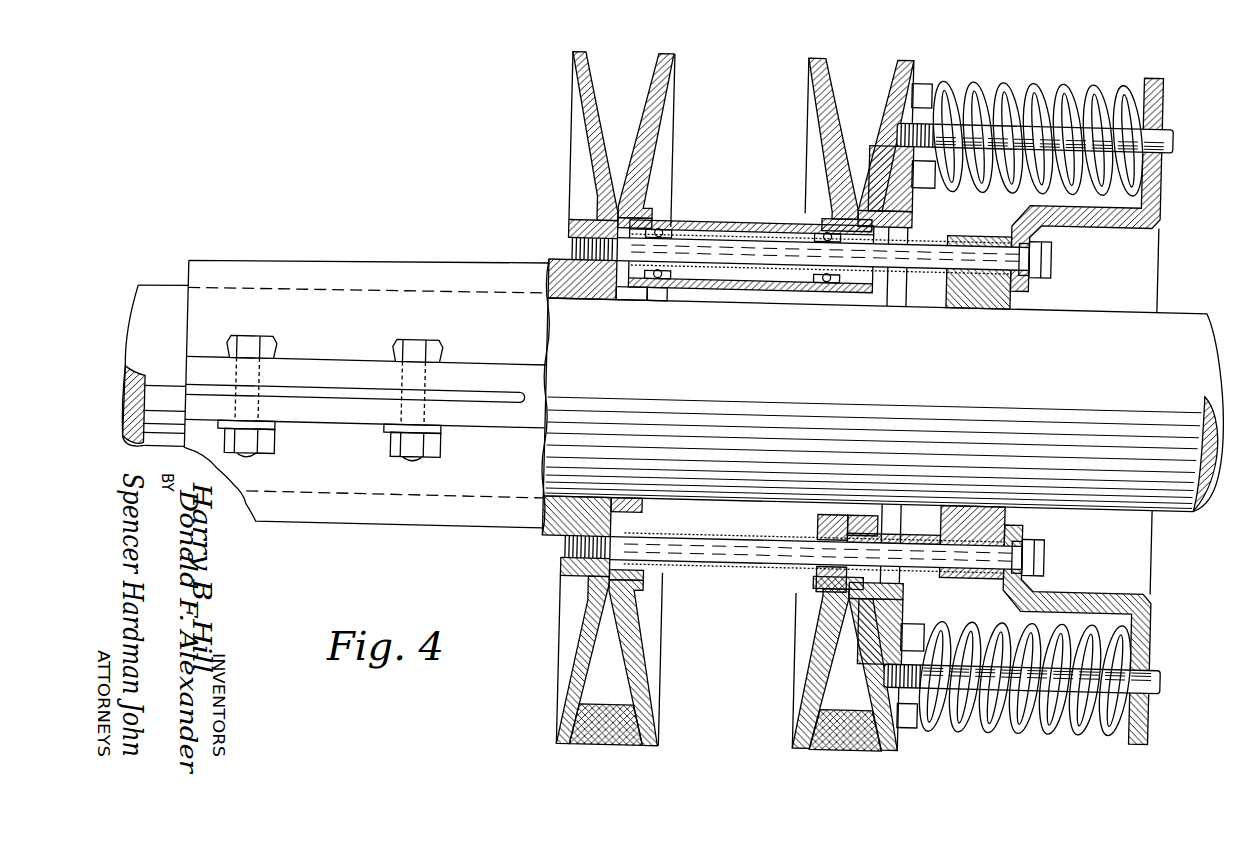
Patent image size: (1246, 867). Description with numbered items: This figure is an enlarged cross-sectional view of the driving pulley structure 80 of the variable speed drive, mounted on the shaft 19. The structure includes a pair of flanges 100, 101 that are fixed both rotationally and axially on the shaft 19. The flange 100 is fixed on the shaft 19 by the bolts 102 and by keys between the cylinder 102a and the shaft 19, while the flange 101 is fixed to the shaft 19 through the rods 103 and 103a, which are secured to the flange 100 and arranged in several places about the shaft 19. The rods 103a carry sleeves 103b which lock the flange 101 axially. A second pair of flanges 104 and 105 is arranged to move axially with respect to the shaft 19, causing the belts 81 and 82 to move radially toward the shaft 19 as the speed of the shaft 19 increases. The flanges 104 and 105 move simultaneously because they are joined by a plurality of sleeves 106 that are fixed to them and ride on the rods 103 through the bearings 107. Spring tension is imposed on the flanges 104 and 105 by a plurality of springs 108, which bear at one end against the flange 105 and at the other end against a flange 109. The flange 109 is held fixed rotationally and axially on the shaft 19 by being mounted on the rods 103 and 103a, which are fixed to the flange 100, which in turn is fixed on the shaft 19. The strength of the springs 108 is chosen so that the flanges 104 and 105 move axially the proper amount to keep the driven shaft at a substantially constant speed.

The shaft 19 is at (1178, 292).
The driving pulley structure 80 is at (673, 413).
The belt 81 is at (903, 420).
The belt 82 is at (630, 411).
The flange 100 is at (580, 72).
The flange 101 is at (823, 83).
The bolts 102 is at (254, 347).
The cylinder 102a is at (409, 270).
The rods 103 is at (736, 242).
The rods 103a is at (740, 566).
The sleeves 103b is at (930, 569).
The flange 104 is at (665, 87).
The flange 105 is at (907, 61).
The sleeves 106 is at (688, 217).
The bearings 107 is at (656, 220).
The springs 108 is at (1037, 81).
The flange 109 is at (1157, 170).